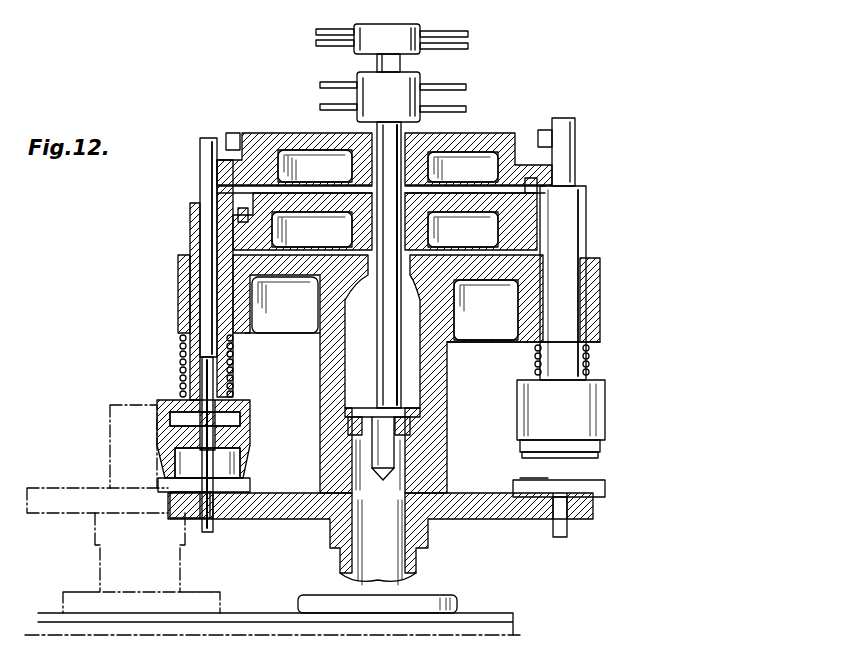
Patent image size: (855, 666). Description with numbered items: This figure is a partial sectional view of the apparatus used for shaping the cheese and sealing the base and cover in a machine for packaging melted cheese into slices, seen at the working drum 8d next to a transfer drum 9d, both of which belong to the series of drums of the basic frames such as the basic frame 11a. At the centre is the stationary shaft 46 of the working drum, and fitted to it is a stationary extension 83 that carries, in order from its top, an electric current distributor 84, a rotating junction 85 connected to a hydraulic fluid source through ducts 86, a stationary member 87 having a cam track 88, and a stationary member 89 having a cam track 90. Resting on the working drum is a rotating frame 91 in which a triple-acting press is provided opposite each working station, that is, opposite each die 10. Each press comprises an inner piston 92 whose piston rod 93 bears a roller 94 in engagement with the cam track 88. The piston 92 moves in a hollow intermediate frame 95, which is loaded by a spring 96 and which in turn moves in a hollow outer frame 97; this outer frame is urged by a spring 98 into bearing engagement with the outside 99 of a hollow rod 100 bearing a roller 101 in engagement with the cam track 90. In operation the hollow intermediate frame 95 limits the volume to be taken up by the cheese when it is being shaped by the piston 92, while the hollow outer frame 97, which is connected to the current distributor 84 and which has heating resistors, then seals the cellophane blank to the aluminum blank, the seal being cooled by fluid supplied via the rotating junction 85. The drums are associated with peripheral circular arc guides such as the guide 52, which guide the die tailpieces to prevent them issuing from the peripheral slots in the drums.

The electric current distributor 84 is at (365, 37).
The rotating junction 85 is at (408, 82).
The ducts 86 is at (466, 112).
The stationary member 87 is at (487, 145).
The cam track 88 is at (257, 150).
The stationary member 89 is at (540, 228).
The cam track 90 is at (262, 242).
The rotating frame 91 is at (443, 427).
The inner piston 92 is at (213, 460).
The piston rod 93 is at (200, 152).
The roller 94 is at (232, 132).
The hollow intermediate frame 95 is at (237, 432).
The spring 96 is at (233, 372).
The hollow outer frame 97 is at (248, 402).
The spring 98 is at (182, 355).
The outside of hollow rod 99 is at (177, 395).
The hollow rod 100 is at (192, 238).
The roller 101 is at (243, 208).
The basic frame 11a is at (152, 303).
The stationary extension 83 is at (393, 370).
The stationary shaft 46 is at (397, 495).
The working drum 8d is at (500, 515).
The guide 52 is at (582, 523).
The die 10 is at (600, 497).
The transfer drum 9d is at (47, 490).